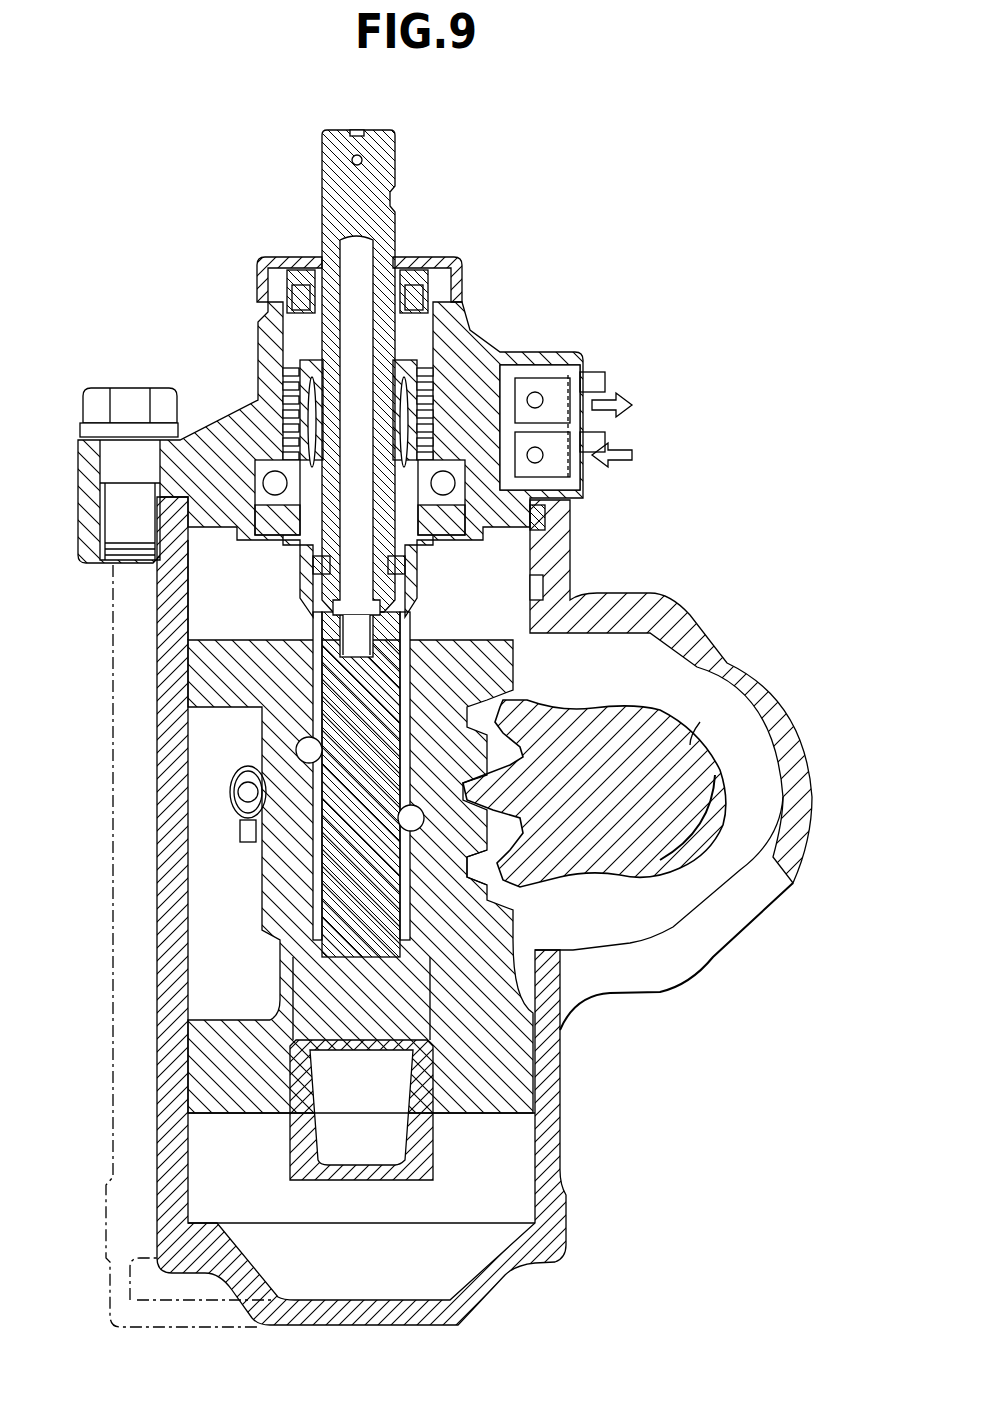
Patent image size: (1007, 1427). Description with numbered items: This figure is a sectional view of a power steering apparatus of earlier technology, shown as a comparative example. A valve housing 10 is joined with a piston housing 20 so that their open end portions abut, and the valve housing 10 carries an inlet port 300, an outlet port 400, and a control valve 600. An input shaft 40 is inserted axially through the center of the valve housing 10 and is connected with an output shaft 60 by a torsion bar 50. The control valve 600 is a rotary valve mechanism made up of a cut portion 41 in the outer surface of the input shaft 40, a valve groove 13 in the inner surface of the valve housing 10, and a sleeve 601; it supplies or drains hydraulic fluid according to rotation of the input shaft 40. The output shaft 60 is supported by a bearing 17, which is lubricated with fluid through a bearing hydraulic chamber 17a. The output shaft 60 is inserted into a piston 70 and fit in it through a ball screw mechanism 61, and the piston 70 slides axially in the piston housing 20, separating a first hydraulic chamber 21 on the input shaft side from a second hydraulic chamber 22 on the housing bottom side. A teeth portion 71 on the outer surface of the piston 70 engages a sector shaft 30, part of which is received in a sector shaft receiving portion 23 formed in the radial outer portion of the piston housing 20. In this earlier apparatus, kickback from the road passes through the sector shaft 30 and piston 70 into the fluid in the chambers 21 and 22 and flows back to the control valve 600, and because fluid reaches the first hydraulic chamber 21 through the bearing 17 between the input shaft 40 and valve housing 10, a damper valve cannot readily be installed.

The valve housing 10 is at (270, 253).
The valve groove 13 is at (440, 400).
The bearing 17 is at (545, 545).
The bearing hydraulic chamber 17a is at (540, 518).
The piston housing 20 is at (572, 1222).
The first hydraulic chamber 21 is at (232, 595).
The second hydraulic chamber 22 is at (225, 1155).
The sector shaft receiving portion 23 is at (707, 915).
The sector shaft 30 is at (662, 750).
The input shaft 40 is at (330, 162).
The cut portion 41 is at (448, 352).
The torsion bar 50 is at (335, 415).
The output shaft 60 is at (335, 900).
The ball screw mechanism 61 is at (300, 752).
The piston 70 is at (225, 677).
The teeth portion 71 is at (543, 877).
The inlet port 300 is at (605, 476).
The outlet port 400 is at (588, 387).
The control valve 600 is at (347, 363).
The sleeve 601 is at (285, 432).